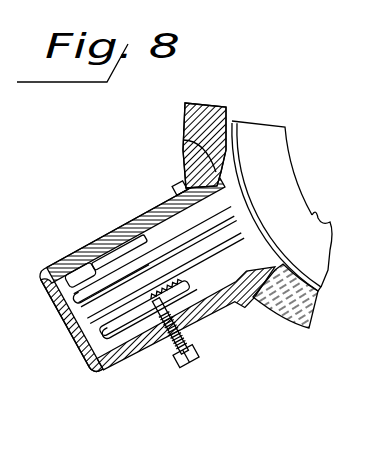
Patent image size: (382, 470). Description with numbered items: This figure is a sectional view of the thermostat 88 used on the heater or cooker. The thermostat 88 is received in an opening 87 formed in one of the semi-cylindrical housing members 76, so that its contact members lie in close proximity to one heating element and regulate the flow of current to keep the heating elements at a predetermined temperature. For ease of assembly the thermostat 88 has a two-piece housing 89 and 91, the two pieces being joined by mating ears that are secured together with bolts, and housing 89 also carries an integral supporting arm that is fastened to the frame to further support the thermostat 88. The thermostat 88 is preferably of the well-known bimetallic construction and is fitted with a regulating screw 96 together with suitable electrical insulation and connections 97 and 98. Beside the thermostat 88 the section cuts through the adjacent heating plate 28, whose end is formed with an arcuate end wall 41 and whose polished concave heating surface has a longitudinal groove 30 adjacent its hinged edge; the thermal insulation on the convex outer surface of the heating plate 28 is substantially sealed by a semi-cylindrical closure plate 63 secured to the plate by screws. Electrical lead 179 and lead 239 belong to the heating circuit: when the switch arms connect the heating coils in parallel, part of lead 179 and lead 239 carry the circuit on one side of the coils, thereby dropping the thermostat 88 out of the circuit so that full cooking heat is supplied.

The heating plate 28 is at (292, 184).
The longitudinal groove 30 is at (322, 214).
The arcuate end wall 41 is at (278, 147).
The semi-cylindrical closure plate 63 is at (322, 288).
The semi-cylindrical housing member 76 is at (310, 330).
The opening 87 is at (183, 140).
The thermostat 88 is at (110, 230).
The housing 89 is at (103, 374).
The housing 91 is at (46, 292).
The regulating screw 96 is at (200, 356).
The electrical insulation and connection 97 is at (122, 363).
The electrical insulation and connection 98 is at (73, 284).
The lead 179 is at (78, 298).
The lead 239 is at (20, 460).